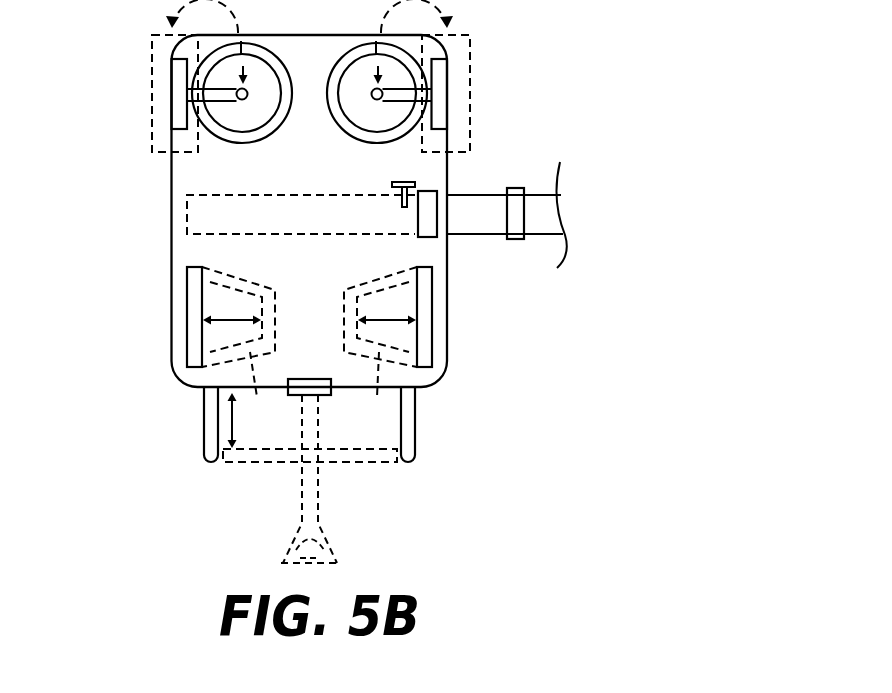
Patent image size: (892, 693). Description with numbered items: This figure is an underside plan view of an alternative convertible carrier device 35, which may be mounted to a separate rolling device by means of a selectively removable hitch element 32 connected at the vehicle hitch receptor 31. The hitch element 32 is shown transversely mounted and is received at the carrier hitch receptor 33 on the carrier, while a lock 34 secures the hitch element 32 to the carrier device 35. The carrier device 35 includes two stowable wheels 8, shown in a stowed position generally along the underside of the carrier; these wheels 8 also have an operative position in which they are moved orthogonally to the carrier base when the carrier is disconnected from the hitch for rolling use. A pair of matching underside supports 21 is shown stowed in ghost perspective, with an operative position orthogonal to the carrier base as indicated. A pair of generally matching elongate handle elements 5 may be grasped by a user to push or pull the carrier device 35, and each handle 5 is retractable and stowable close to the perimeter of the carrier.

The handle 5 is at (207, 421).
The wheel 8 is at (343, 100).
The underside supports 21 is at (309, 357).
The vehicle hitch receptor 31 is at (518, 188).
The selectively removable hitch element 32 is at (478, 226).
The carrier hitch receptor 33 is at (205, 214).
The lock 34 is at (403, 196).
The carrier device 3 35 is at (180, 200).